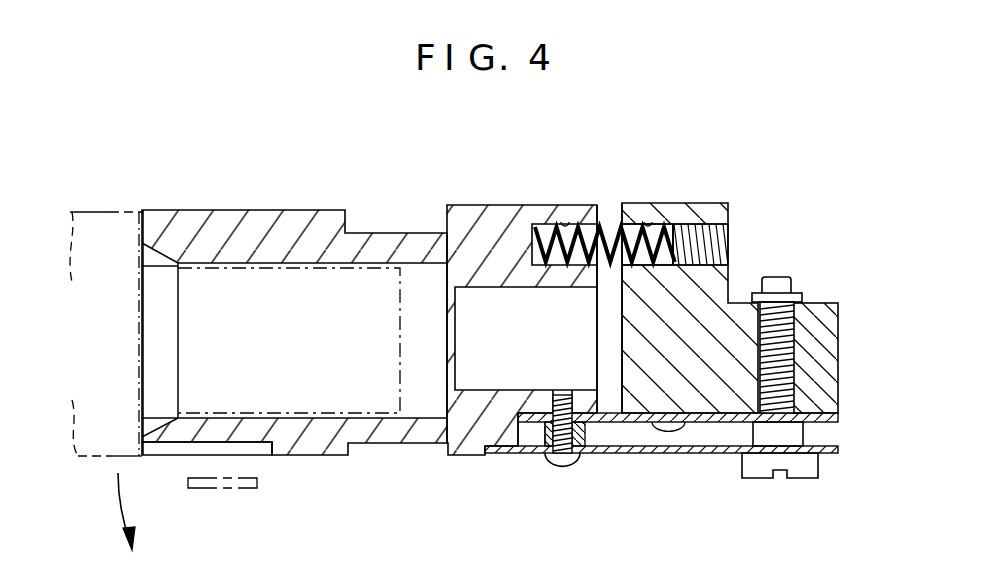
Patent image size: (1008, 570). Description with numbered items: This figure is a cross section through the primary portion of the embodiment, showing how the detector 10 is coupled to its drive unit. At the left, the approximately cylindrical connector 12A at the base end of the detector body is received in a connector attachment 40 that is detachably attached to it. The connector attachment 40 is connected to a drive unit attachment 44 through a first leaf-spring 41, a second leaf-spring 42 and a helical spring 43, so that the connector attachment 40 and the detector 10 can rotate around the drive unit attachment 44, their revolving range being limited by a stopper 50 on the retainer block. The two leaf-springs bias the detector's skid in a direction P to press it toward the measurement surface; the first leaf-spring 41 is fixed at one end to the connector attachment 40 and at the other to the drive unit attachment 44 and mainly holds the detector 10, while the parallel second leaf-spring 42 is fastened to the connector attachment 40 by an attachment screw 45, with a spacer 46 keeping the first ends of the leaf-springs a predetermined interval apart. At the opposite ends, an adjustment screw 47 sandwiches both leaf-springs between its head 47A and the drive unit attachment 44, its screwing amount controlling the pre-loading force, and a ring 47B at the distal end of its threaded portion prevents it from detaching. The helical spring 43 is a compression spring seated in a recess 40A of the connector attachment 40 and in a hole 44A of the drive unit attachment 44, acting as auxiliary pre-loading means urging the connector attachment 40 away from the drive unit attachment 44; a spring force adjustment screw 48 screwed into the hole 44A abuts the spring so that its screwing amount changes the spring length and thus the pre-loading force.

The detector 10 is at (98, 212).
The connector 12A is at (288, 268).
The connector attachment 40 is at (483, 223).
The recess 40A is at (565, 222).
The helical spring 43 is at (610, 225).
The drive unit attachment 44 is at (720, 288).
The hole 44A is at (647, 222).
The spring force adjustment screw 48 is at (715, 232).
The first leaf-spring 41 is at (617, 424).
The second leaf-spring 42 is at (693, 453).
The attachment screw 45 is at (565, 466).
The spacer 46 is at (540, 440).
The adjustment screw 47 is at (767, 382).
The head 47A is at (802, 474).
The ring 47B is at (802, 296).
The stopper 50 is at (257, 483).
The direction P is at (125, 505).